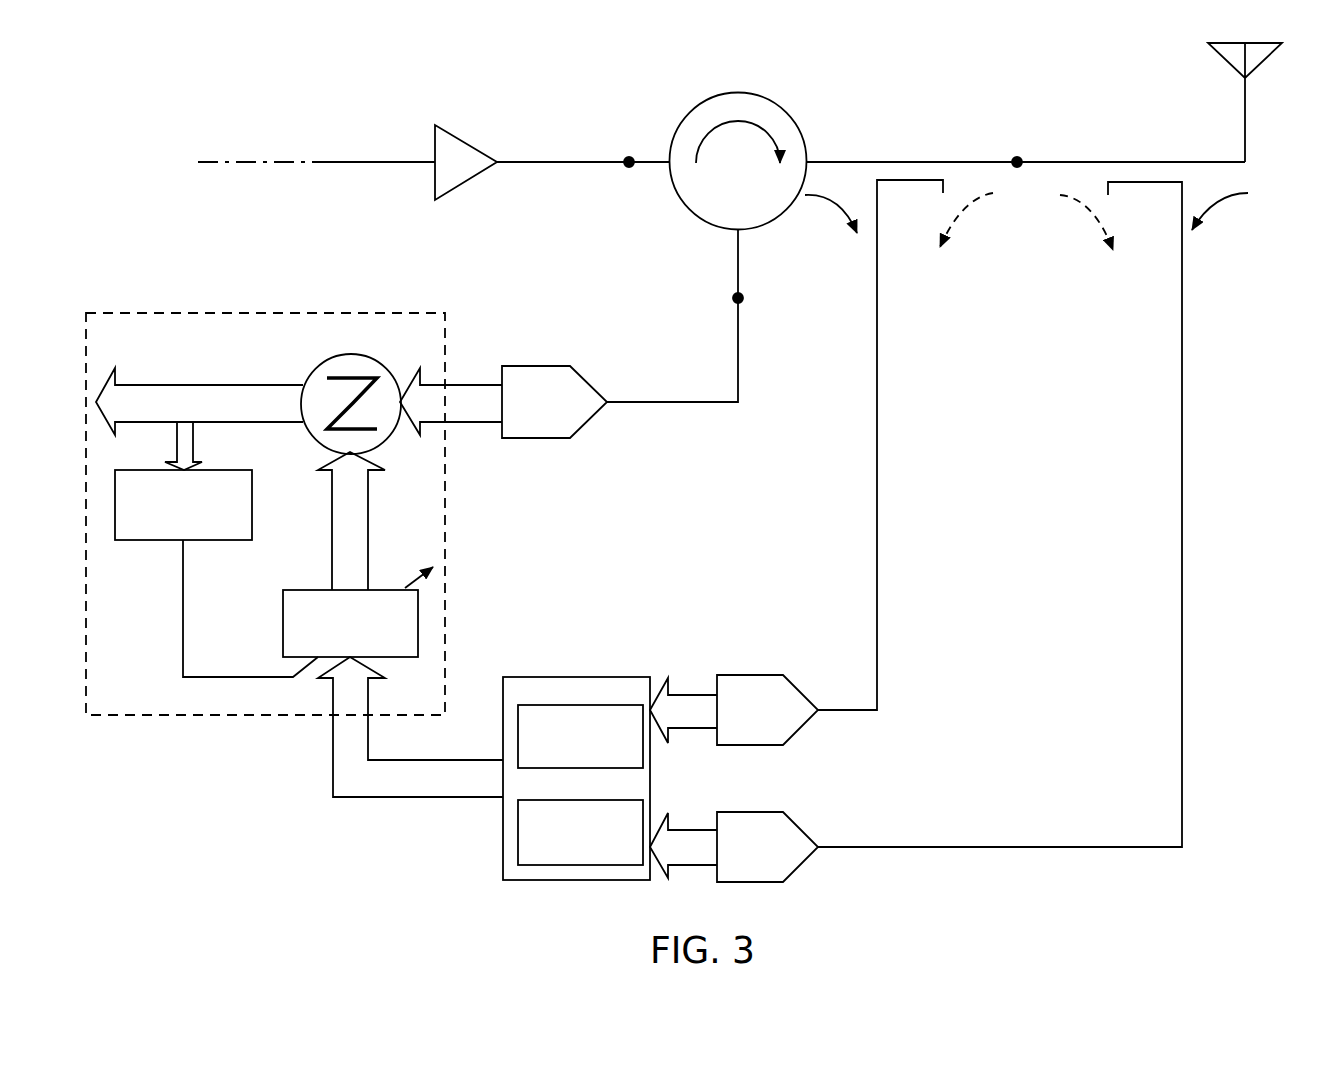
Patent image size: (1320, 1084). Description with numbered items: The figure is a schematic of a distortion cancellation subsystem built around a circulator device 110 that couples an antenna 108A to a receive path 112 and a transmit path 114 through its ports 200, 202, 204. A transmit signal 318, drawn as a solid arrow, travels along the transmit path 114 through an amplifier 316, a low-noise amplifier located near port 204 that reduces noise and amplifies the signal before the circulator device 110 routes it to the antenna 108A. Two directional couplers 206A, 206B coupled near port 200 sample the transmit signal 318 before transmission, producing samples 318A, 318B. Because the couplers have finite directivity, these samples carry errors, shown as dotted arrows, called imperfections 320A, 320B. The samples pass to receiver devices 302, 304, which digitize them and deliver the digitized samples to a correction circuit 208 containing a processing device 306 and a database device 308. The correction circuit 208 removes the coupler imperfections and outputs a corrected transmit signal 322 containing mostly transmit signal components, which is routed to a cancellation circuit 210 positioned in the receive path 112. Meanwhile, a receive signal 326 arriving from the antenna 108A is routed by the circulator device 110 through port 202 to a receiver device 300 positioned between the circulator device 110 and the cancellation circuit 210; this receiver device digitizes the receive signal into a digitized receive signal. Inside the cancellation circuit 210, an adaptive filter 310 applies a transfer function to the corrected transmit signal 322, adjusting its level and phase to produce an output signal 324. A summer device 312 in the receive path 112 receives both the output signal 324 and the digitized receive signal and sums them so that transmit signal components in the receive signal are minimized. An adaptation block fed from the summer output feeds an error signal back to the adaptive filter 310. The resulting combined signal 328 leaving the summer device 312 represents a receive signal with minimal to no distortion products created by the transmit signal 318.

The circulator device 110 is at (767, 100).
The antenna 108A is at (1245, 120).
The transmit path 114 is at (550, 165).
The receive path 112 is at (742, 345).
The port 204 is at (631, 157).
The port 200 is at (1020, 157).
The port 202 is at (745, 297).
The directional coupler 206A is at (877, 330).
The directional coupler 206B is at (1182, 320).
The correction circuit 208 is at (545, 677).
The cancellation circuit 210 is at (110, 312).
The receiver device 300 is at (565, 366).
The receiver device 302 is at (775, 675).
The receiver device 304 is at (775, 812).
The processing device 306 is at (518, 735).
The database device 308 is at (518, 832).
The adaptive filter 310 is at (283, 620).
The summer device 312 is at (355, 353).
The amplifier 316 is at (460, 140).
The transmit signal 318 is at (323, 149).
The sample 318A is at (821, 199).
The sample 318B is at (1227, 198).
The imperfection 320A is at (966, 232).
The imperfection 320B is at (1085, 228).
The corrected transmit signal 322 is at (315, 780).
The output signal 324 is at (390, 525).
The receive signal 326 is at (685, 383).
The combined signal 328 is at (235, 354).